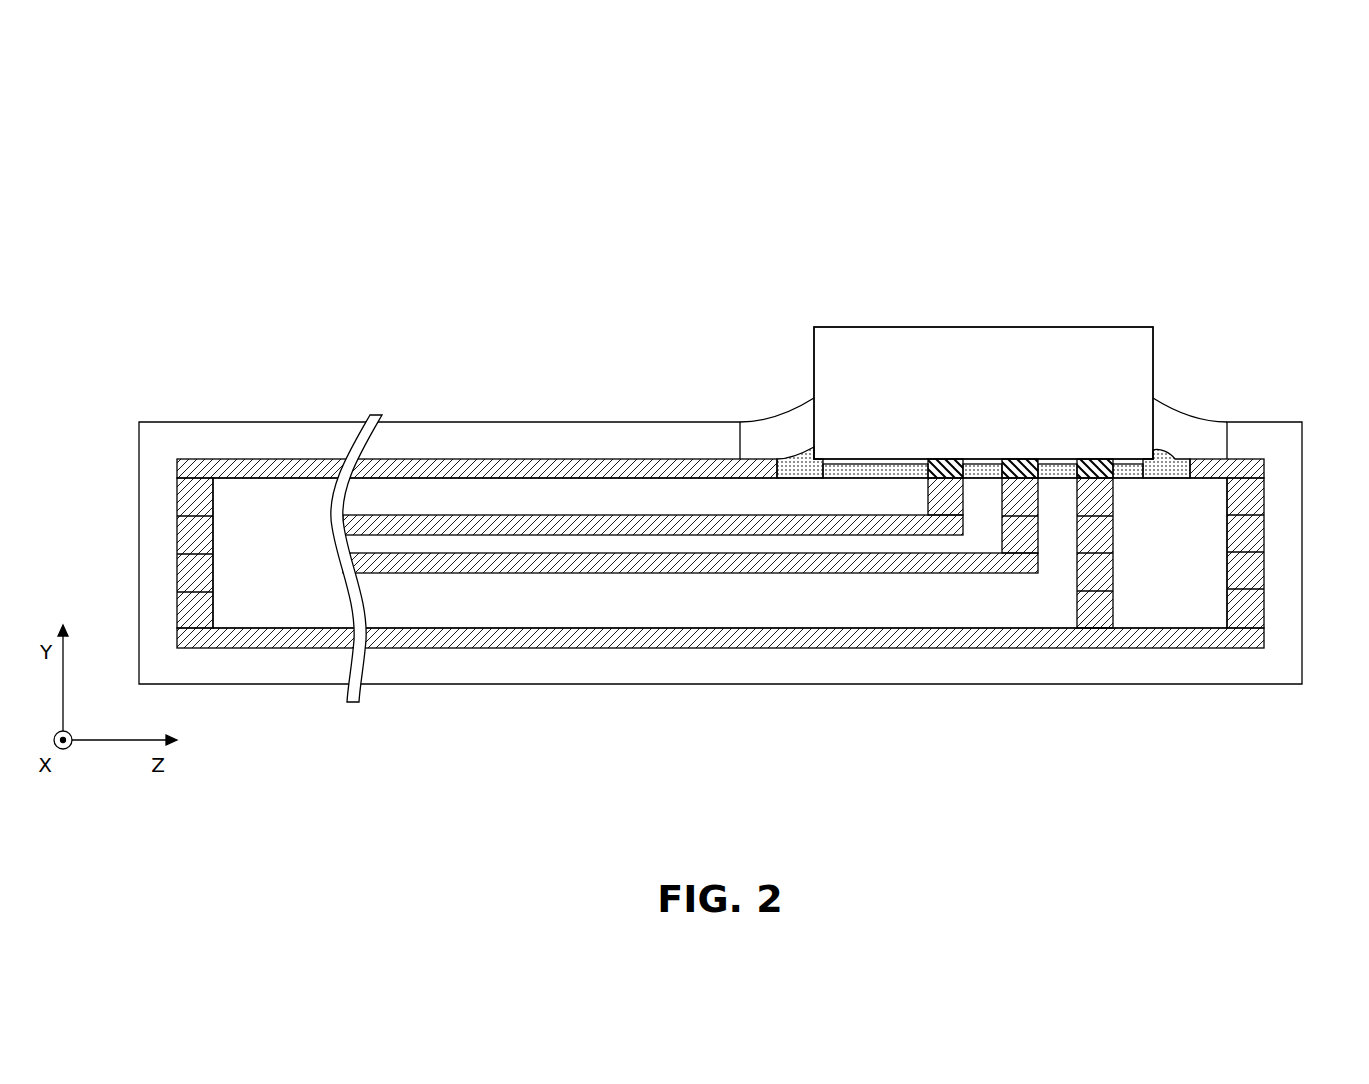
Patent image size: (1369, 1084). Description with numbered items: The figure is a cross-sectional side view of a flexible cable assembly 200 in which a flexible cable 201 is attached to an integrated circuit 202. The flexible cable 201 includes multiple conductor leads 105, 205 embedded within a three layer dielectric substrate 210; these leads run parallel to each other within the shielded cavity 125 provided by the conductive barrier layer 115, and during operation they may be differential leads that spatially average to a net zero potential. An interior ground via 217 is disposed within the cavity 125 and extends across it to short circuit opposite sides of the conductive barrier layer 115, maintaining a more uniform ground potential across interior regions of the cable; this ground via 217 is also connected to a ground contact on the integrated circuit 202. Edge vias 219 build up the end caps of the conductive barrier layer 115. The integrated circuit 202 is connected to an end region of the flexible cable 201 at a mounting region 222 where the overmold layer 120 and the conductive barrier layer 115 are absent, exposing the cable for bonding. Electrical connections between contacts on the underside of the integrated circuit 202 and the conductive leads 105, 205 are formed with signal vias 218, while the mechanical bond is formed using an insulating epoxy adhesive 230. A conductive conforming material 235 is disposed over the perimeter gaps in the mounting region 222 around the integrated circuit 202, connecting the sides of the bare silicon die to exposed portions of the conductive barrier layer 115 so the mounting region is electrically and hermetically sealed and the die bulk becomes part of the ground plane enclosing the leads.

The flexible cable assembly 200 is at (1198, 146).
The flexible cable 201 is at (327, 363).
The integrated circuit 202 is at (983, 393).
The mounting region 222 is at (1227, 313).
The insulating epoxy adhesive 230 is at (790, 460).
The conductive conforming material 235 is at (983, 421).
The signal vias 218 is at (928, 490).
The interior ground via 217 is at (1113, 570).
The edge vias 219 is at (177, 483).
The conductive barrier layer 115 is at (513, 460).
The conductor lead 105 is at (562, 562).
The conductor lead 205 is at (352, 526).
The three layer dielectric substrate 210 is at (720, 553).
The overmold layer 120 is at (822, 677).
The shielded cavity 125 is at (1217, 483).